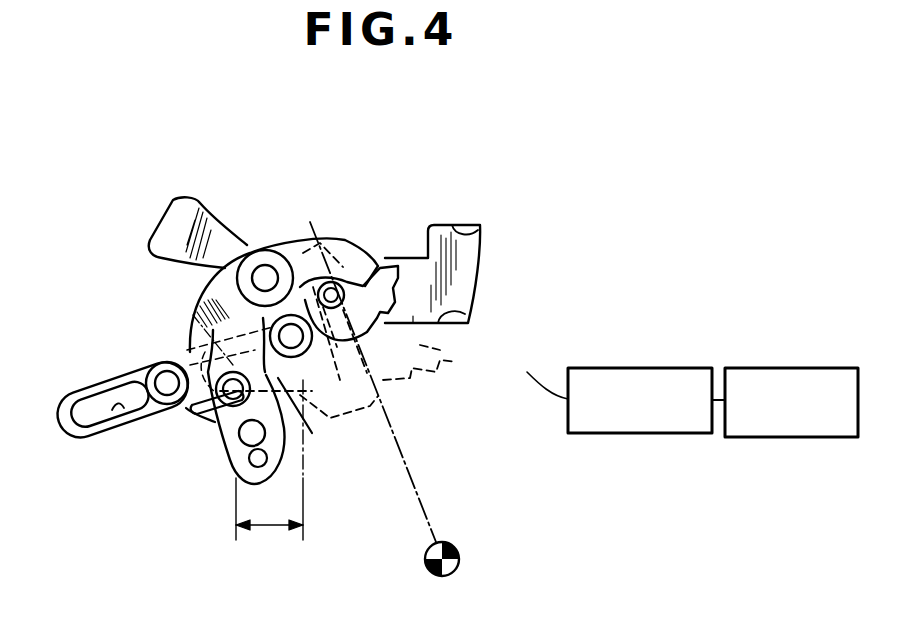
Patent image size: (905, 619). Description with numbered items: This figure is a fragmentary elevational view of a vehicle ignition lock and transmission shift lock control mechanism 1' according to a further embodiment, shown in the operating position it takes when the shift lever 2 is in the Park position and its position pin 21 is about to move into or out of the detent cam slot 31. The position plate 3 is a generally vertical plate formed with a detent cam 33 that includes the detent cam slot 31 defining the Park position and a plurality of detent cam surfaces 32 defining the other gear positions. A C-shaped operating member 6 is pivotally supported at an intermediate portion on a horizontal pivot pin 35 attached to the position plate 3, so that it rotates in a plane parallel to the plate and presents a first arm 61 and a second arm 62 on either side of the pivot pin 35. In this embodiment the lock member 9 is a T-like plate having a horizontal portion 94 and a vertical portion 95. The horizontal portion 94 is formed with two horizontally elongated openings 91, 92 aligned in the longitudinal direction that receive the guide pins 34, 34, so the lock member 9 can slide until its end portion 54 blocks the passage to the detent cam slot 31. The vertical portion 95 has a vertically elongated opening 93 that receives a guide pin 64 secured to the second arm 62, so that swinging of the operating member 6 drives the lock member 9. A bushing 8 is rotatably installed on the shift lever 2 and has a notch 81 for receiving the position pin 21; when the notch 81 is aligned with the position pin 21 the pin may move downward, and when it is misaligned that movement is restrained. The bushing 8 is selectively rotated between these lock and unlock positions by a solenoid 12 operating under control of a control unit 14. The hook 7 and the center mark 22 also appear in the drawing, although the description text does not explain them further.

The vehicle ignition lock and transmission shift lock control mechanism 1' is at (188, 172).
The shift lever 2 is at (421, 497).
The position plate 3 is at (437, 335).
The operating member 6 is at (316, 222).
The hook 7 is at (222, 428).
The bushing 8 is at (428, 376).
The lock member 9 is at (61, 428).
The solenoid 12 is at (657, 368).
The control unit 14 is at (767, 368).
The position pin 21 is at (383, 266).
The center of gravity 22 is at (460, 552).
The detent cam slot 31 is at (330, 240).
The detent cam surfaces 32 is at (428, 265).
The detent cam 33 is at (462, 315).
The guide pins 34 is at (160, 372).
The pivot pin 35 is at (266, 277).
The end portion 54 is at (385, 285).
The first arm 61 is at (355, 240).
The second arm 62 is at (242, 417).
The guide pin 64 is at (268, 458).
The notch 81 is at (387, 373).
The horizontally elongated opening 91 is at (117, 410).
The horizontally elongated opening 92 is at (307, 430).
The vertically elongated opening 93 is at (247, 453).
The horizontal portion 94 is at (75, 394).
The vertical portion 95 is at (270, 473).